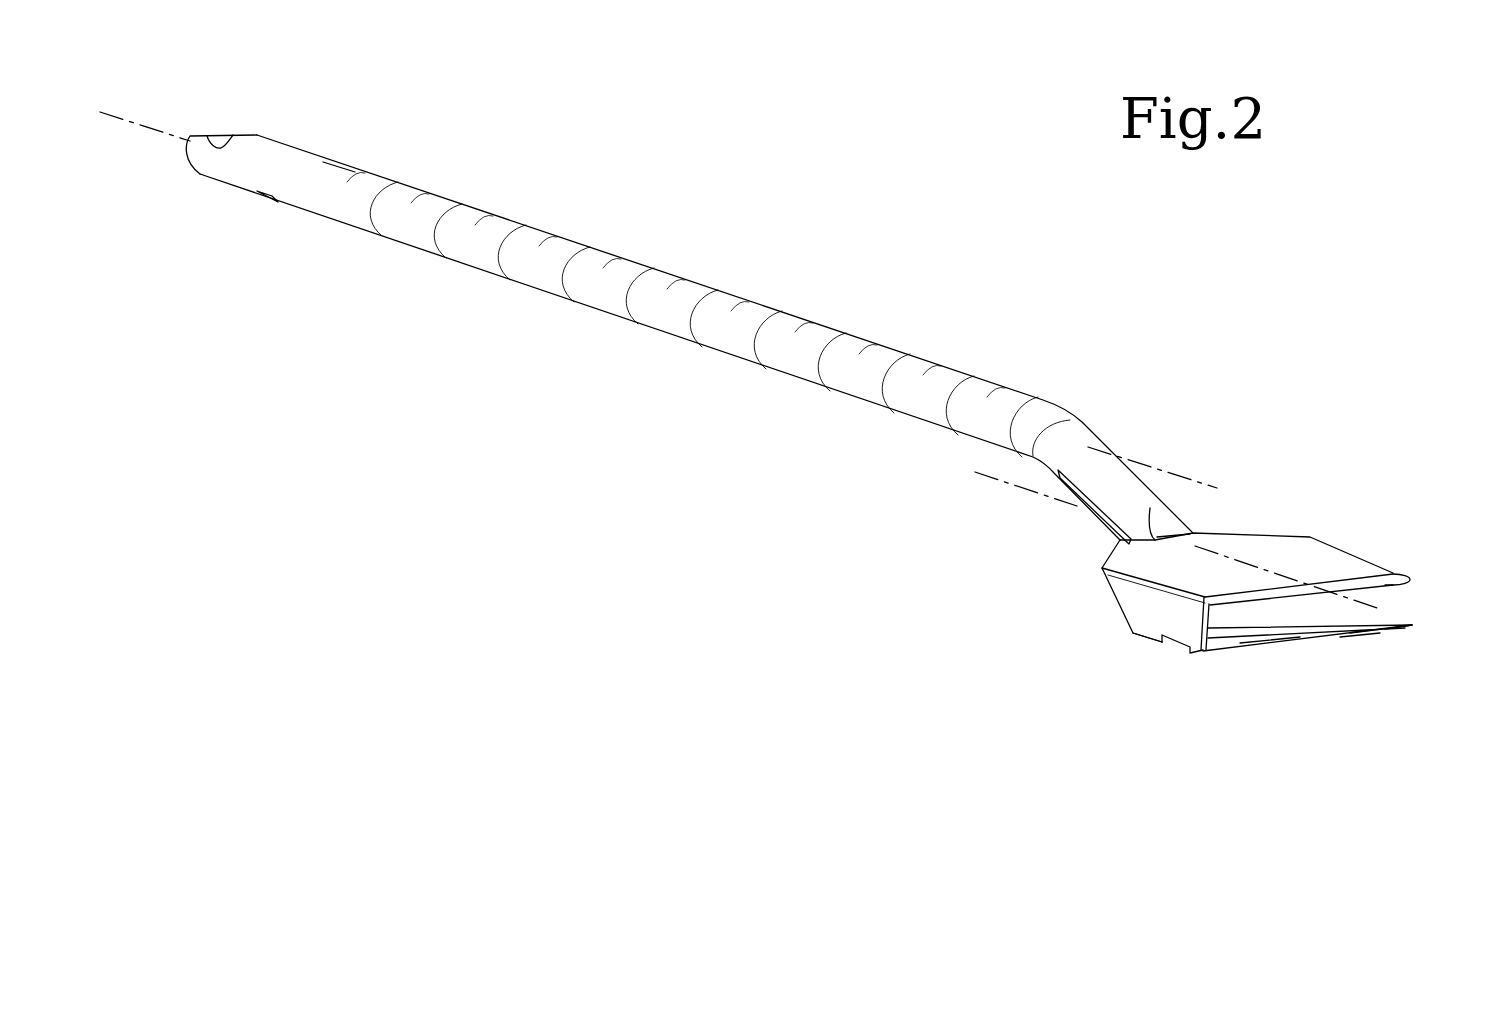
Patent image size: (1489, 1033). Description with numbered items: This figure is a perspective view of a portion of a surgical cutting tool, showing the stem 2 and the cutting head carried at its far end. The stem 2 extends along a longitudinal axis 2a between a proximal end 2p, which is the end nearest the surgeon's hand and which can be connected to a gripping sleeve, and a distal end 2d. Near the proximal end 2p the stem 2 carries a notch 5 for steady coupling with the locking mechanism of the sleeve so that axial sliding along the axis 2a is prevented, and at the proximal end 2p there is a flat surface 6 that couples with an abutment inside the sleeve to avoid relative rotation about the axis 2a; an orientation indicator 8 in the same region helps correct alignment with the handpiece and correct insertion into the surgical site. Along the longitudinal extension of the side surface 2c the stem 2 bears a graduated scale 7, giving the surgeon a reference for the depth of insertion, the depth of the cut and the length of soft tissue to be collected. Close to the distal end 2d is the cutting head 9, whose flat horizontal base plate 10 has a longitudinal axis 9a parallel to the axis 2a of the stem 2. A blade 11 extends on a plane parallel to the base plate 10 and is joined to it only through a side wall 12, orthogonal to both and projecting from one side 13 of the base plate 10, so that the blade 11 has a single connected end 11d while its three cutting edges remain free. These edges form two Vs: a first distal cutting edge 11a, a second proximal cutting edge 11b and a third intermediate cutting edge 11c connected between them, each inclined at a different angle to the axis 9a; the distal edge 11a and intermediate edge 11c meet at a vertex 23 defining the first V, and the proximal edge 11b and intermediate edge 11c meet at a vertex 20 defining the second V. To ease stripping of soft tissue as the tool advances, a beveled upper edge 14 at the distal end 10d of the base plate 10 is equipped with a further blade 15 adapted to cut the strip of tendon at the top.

The stem 2 is at (800, 317).
The proximal end 2p is at (217, 136).
The flat surface 6 is at (212, 143).
The orientation indicator 8 is at (342, 163).
The notch 5 is at (270, 201).
The side surface 2c is at (550, 277).
The graduated scale 7 is at (705, 297).
The distal end 2d is at (1113, 493).
The longitudinal axis 2a is at (1168, 475).
The cutting head 9 is at (1331, 543).
The longitudinal axis of the cutting head 9a is at (1000, 480).
The base plate 10 is at (1250, 547).
The distal end of the base plate 10d is at (1340, 582).
The beveled upper edge 14 is at (1393, 566).
The blade 15 is at (1387, 587).
The side of the base plate 13 is at (1123, 577).
The side wall 12 is at (1143, 605).
The blade 11 is at (1222, 652).
The first distal cutting edge 11a is at (1277, 640).
The second proximal cutting edge 11b is at (1408, 627).
The third intermediate cutting edge 11c is at (1366, 627).
The end of the blade 11d is at (1155, 640).
The vertex 23 is at (1360, 635).
The vertex 20 is at (1413, 626).